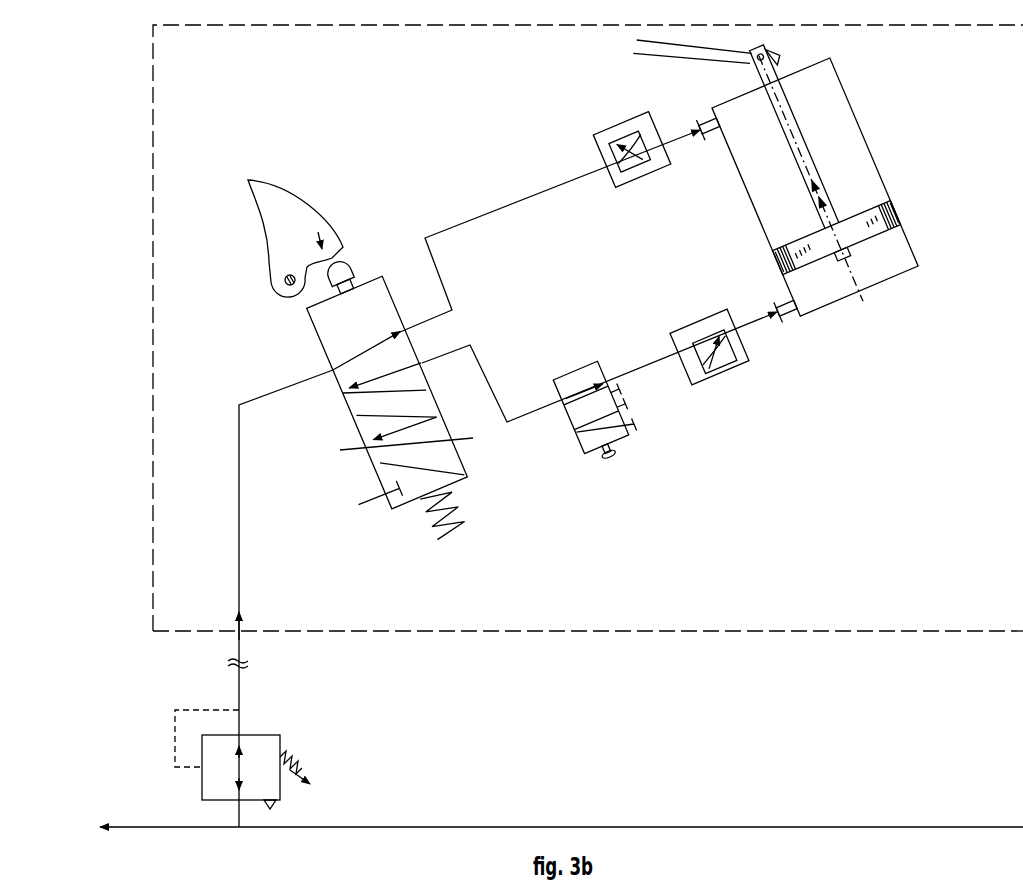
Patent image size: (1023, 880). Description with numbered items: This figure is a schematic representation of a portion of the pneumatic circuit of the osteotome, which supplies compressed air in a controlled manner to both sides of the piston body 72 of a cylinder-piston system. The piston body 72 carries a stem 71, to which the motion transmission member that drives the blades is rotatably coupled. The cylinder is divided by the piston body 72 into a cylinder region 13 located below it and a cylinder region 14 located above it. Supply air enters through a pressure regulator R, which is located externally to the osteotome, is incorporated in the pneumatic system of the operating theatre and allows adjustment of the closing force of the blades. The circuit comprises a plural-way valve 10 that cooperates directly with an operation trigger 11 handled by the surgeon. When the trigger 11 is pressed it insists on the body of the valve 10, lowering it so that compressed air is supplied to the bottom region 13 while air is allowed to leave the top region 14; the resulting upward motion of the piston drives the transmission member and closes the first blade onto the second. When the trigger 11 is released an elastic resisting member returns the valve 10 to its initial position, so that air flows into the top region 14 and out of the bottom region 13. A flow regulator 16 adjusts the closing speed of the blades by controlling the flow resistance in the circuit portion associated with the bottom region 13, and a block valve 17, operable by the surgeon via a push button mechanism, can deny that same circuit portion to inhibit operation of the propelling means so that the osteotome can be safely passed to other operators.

The plural-way valve 10 is at (378, 480).
The operation trigger 11 is at (270, 228).
The cylinder region below the piston body 13 is at (832, 193).
The cylinder region above the piston body 14 is at (847, 155).
The flow regulator 16 is at (593, 150).
The block valve 17 is at (575, 448).
The stem of the piston 71 is at (830, 100).
The piston body 72 is at (900, 228).
The pressure regulator R is at (303, 795).